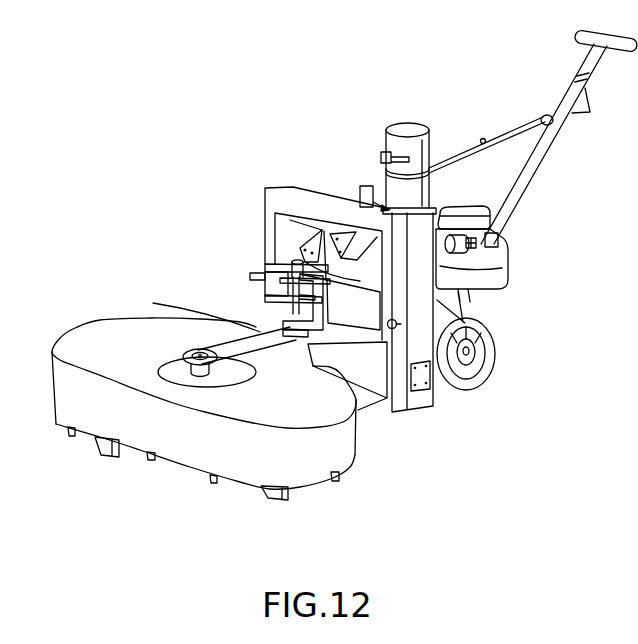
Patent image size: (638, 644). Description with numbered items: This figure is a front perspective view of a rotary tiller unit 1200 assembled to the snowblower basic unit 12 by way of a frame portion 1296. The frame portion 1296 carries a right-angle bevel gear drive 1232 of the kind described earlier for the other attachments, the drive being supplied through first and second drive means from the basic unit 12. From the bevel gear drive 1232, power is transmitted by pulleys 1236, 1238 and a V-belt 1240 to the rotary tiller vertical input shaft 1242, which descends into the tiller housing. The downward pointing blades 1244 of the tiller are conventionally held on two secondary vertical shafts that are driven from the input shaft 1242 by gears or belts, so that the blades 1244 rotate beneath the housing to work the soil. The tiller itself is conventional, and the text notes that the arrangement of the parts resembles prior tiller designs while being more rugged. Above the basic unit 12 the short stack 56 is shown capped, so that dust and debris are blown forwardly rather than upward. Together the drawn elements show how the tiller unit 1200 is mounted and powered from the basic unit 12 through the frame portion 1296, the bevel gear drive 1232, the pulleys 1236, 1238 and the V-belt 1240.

The snowblower basic unit 12 is at (513, 286).
The short stack 56 is at (376, 184).
The rotary tiller unit 1200 is at (120, 248).
The right-angle bevel gear drive 1232 is at (275, 317).
The pulley 1236 is at (186, 348).
The pulley 1238 is at (287, 334).
The V-belt 1240 is at (180, 310).
The rotary tiller vertical input shaft 1242 is at (172, 358).
The downward pointing blades 1244 is at (290, 497).
The frame portion 1296 is at (264, 189).